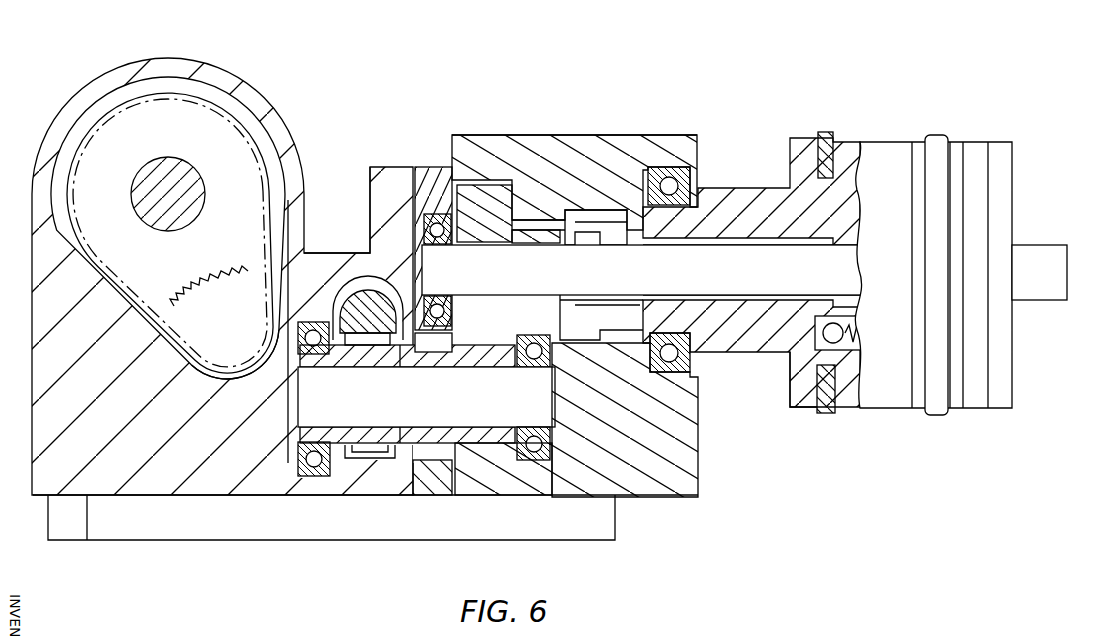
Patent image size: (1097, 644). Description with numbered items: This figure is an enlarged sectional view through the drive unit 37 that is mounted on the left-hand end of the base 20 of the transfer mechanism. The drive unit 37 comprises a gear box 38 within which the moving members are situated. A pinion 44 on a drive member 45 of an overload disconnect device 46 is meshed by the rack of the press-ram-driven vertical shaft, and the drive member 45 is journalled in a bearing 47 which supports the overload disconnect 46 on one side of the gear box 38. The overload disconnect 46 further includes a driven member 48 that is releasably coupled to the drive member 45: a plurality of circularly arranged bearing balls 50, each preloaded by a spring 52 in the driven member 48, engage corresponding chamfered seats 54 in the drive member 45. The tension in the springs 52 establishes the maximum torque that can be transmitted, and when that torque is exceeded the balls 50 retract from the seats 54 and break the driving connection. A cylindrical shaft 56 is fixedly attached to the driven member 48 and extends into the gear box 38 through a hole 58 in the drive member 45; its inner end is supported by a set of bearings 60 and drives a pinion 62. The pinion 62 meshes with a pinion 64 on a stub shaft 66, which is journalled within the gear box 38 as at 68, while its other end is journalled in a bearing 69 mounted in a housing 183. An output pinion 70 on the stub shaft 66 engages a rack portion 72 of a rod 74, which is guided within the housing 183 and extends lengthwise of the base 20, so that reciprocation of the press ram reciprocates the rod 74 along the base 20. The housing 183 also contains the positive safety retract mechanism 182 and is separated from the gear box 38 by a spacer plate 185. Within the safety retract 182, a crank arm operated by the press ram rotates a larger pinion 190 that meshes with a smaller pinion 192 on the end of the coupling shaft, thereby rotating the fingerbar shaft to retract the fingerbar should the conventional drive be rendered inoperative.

The base 20 is at (604, 518).
The drive unit 37 is at (540, 108).
The gear box 38 is at (592, 134).
The pinion 44 is at (592, 219).
The drive member 45 is at (749, 197).
The overload disconnect device 46 is at (978, 127).
The bearing 47 is at (690, 181).
The driven member 48 is at (843, 398).
The bearing balls 50 is at (843, 326).
The spring 52 is at (868, 331).
The chamfered seats 54 is at (790, 370).
The cylindrical shaft 56 is at (1048, 255).
The hole 58 is at (733, 293).
The bearings 60 is at (482, 350).
The pinion 62 is at (468, 186).
The pinion 64 is at (503, 469).
The stub shaft 66 is at (535, 392).
The journal 68 is at (545, 441).
The bearing 69 is at (300, 465).
The output pinion 70 is at (355, 452).
The rack portion 72 is at (336, 326).
The rod 74 is at (368, 296).
The safety retract mechanism 182 is at (289, 89).
The housing 183 is at (315, 267).
The spacer plate 185 is at (433, 488).
The larger pinion 190 is at (195, 120).
The smaller pinion 192 is at (217, 338).